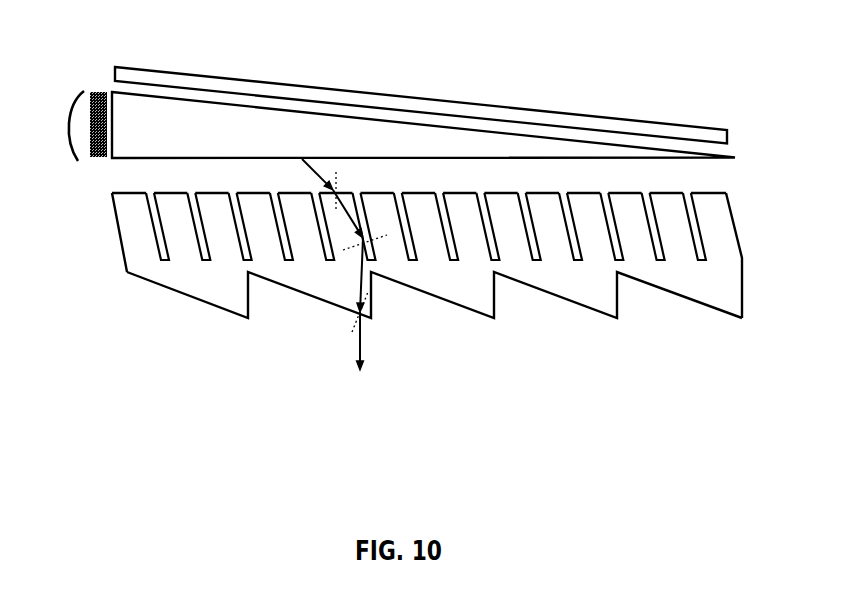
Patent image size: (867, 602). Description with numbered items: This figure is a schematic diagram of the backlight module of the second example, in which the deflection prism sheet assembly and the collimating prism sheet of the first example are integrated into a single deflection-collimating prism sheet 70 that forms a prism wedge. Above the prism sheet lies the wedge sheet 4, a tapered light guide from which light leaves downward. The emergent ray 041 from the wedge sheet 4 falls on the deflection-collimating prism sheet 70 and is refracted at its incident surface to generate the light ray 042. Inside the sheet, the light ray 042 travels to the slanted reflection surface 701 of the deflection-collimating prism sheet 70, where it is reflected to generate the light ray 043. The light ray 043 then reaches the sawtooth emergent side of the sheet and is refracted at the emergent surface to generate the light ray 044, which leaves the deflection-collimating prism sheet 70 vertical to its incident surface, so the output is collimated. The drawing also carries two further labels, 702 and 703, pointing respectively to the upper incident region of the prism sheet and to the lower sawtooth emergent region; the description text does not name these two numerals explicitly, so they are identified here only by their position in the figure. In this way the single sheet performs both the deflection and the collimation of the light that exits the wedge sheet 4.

The wedge sheet 4 is at (140, 123).
The deflection-collimating prism sheet 70 is at (717, 247).
The reflection surface 701 is at (364, 200).
The light incident surface of prism sheet 702 is at (212, 192).
The light emitting surface with sawtooth prisms 703 is at (293, 293).
The emergent ray 041 is at (304, 185).
The light ray 042 is at (369, 224).
The light ray 043 is at (349, 285).
The light ray 044 is at (342, 342).